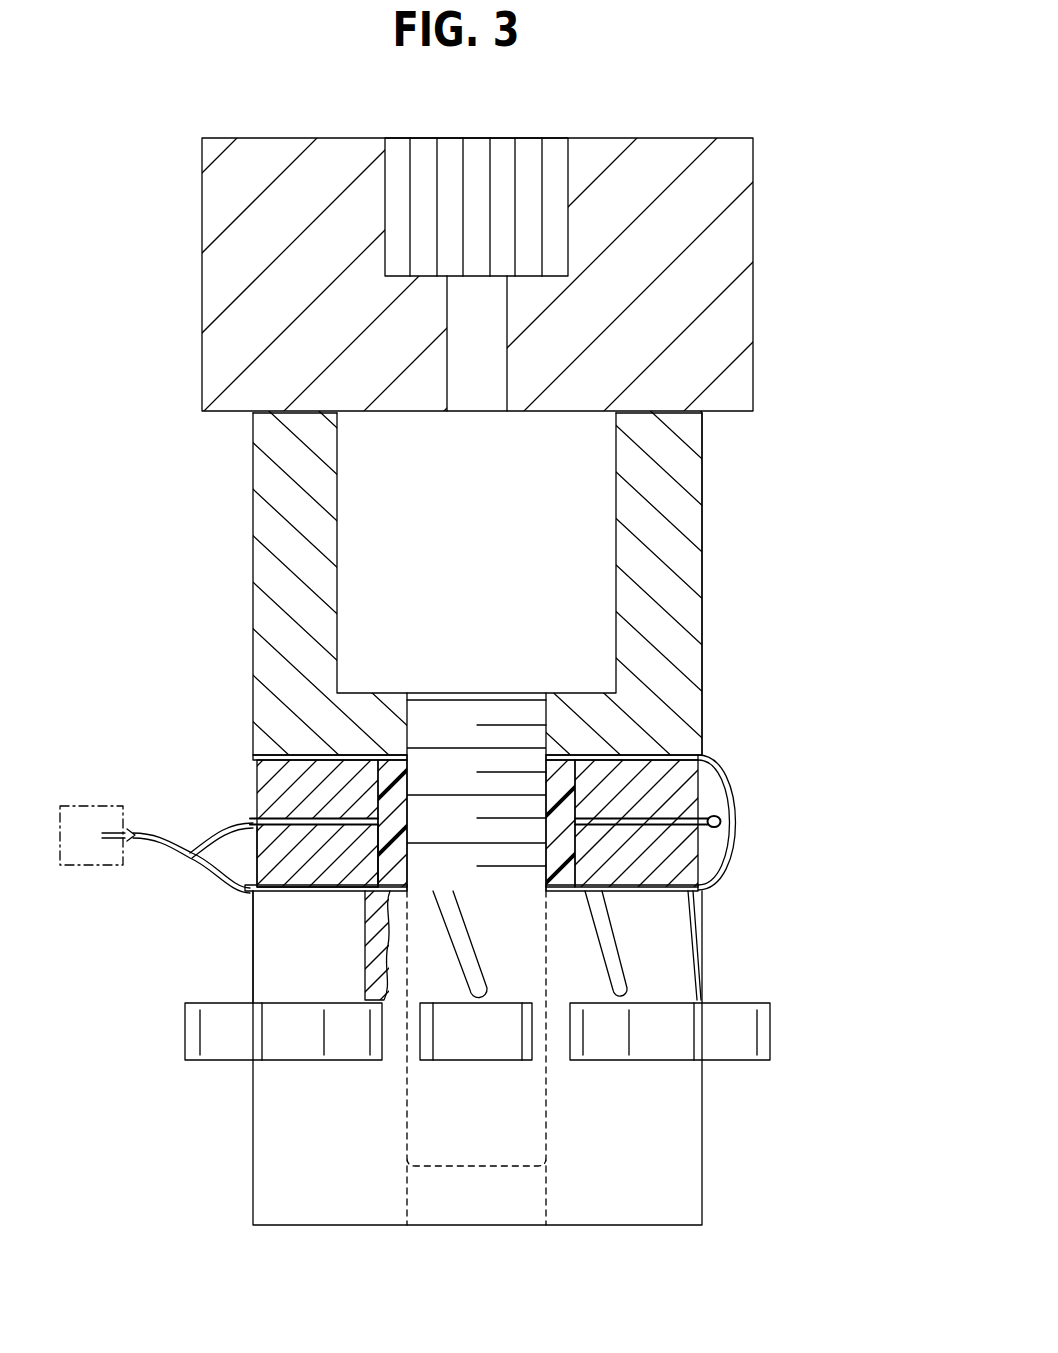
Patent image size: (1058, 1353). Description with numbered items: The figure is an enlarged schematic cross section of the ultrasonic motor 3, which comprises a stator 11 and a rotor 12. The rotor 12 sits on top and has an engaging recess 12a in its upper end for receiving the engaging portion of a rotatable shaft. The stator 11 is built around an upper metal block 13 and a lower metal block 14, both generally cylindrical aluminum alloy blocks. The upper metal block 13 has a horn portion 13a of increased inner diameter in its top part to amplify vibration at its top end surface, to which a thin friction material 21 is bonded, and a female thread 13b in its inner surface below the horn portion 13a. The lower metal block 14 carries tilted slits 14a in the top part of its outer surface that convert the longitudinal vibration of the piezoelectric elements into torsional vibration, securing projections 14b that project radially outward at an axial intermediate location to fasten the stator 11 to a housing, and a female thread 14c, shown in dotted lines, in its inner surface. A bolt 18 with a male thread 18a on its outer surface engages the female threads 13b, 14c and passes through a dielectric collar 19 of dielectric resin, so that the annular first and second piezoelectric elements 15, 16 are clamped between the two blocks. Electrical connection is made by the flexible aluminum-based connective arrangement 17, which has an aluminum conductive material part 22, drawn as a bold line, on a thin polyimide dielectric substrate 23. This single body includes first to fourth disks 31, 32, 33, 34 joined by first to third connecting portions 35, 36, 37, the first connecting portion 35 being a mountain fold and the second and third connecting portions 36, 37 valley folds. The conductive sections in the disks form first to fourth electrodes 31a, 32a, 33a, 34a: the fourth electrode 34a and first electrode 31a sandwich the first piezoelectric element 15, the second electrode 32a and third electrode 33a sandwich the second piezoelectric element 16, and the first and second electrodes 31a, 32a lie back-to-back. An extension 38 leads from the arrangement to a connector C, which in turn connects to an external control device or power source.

The ultrasonic motor 3 is at (752, 462).
The stator 11 is at (715, 425).
The rotor 12 is at (763, 383).
The engaging recess 12a is at (478, 258).
The upper metal block 13 is at (704, 570).
The horn portion 13a is at (338, 493).
The female thread 13b is at (408, 700).
The lower metal block 14 is at (705, 1125).
The slits 14a is at (250, 916).
The securing projections 14b is at (218, 1008).
The female thread 14c is at (405, 1190).
The first piezoelectric element 15 is at (700, 790).
The second piezoelectric element 16 is at (705, 882).
The flexible aluminum-based connective arrangement 17 is at (748, 814).
The bolt 18 is at (468, 702).
The male thread 18a is at (518, 730).
The dielectric collar 19 is at (404, 786).
The friction material 21 is at (250, 418).
The conductive material part 22 is at (695, 900).
The dielectric substrate 23 is at (615, 893).
The first disk 31 is at (264, 815).
The first electrode 31a is at (398, 822).
The second disk 32 is at (268, 834).
The second electrode 32a is at (396, 875).
The third disk 33 is at (290, 900).
The third electrode 33a is at (328, 898).
The fourth disk 34 is at (266, 757).
The fourth electrode 34a is at (705, 758).
The first connecting portion 35 is at (733, 830).
The second connecting portion 36 is at (205, 847).
The third connecting portion 37 is at (740, 852).
The extension 38 is at (148, 850).
The connector C is at (90, 803).